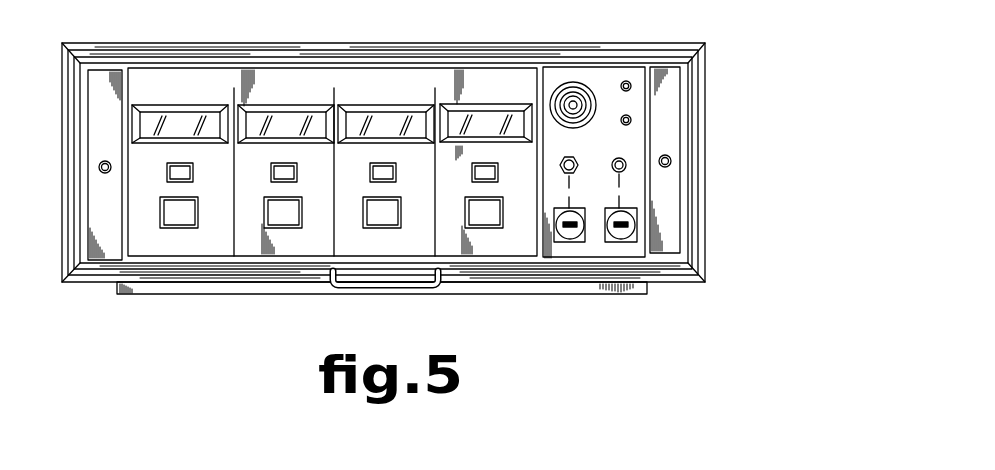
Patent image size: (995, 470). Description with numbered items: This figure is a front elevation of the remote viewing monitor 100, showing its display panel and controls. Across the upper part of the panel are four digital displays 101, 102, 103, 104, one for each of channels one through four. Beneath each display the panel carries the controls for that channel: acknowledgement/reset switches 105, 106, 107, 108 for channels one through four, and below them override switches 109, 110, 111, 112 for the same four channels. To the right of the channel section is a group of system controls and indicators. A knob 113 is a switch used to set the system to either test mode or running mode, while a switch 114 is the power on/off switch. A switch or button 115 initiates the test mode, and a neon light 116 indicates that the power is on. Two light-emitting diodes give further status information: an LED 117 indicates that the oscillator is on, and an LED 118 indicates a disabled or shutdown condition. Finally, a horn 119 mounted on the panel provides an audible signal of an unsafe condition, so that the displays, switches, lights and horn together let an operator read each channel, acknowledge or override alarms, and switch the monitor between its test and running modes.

The monitor 100 is at (199, 43).
The digital display 101 is at (183, 120).
The digital display 102 is at (293, 120).
The digital display 103 is at (397, 117).
The digital display 104 is at (477, 117).
The acknowledgement/reset switch 105 is at (190, 172).
The acknowledgement/reset switch 106 is at (294, 172).
The acknowledgement/reset switch 107 is at (393, 172).
The acknowledgement/reset switch 108 is at (495, 172).
The override switch 109 is at (187, 214).
The override switch 110 is at (291, 214).
The override switch 111 is at (391, 214).
The override switch 112 is at (495, 214).
The knob 113 is at (566, 234).
The power on/off switch 114 is at (627, 231).
The test button 115 is at (569, 157).
The neon light 116 is at (614, 158).
The LED 117 is at (632, 87).
The LED 118 is at (632, 120).
The horn 119 is at (572, 95).